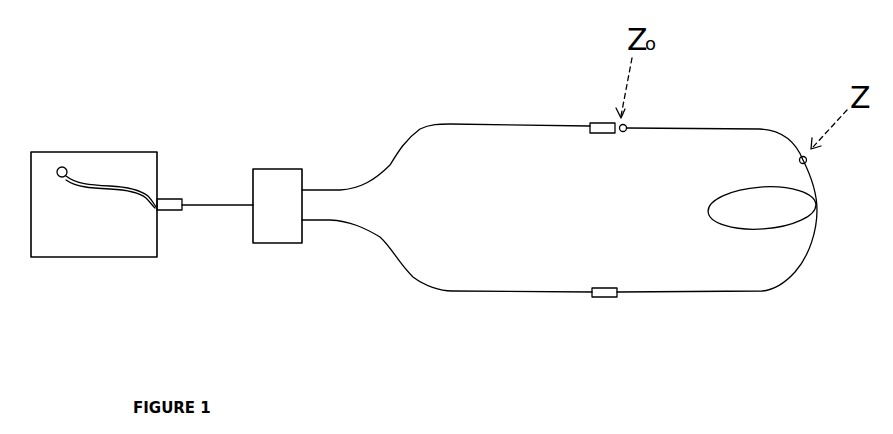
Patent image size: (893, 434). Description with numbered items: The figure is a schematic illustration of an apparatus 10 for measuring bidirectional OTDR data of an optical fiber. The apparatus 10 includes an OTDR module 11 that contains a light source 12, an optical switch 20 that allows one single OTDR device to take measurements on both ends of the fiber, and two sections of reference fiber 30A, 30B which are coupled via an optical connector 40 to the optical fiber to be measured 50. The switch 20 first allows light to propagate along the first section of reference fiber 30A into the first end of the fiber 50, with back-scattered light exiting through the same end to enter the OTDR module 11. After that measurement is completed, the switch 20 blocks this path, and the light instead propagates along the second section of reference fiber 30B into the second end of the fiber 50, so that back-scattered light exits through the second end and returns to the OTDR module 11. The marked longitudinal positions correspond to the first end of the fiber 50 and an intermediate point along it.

The apparatus for measuring bidirectional OTDR data 10 is at (694, 67).
The OTDR module 11 is at (123, 243).
The light source 12 is at (63, 168).
The optical switch 20 is at (297, 177).
The first section of reference fiber 30A is at (410, 133).
The second section of reference fiber 30B is at (383, 243).
The optical connector 40 is at (600, 134).
The optical fiber to be measured 50 is at (709, 203).